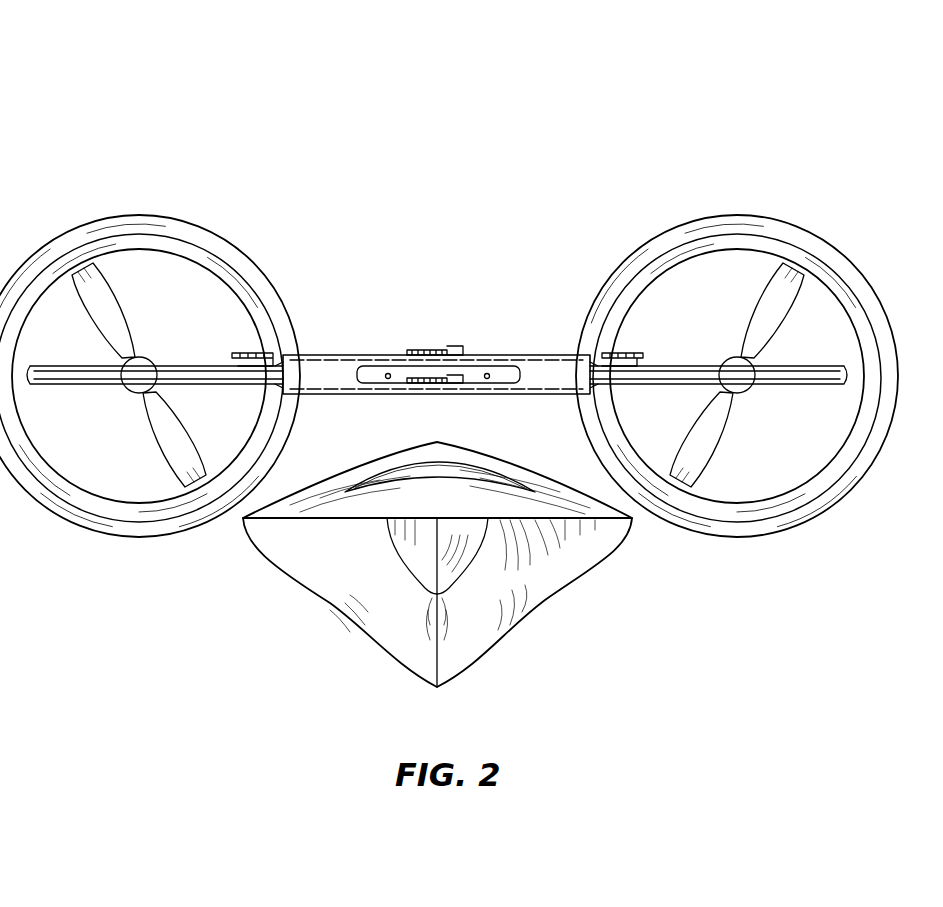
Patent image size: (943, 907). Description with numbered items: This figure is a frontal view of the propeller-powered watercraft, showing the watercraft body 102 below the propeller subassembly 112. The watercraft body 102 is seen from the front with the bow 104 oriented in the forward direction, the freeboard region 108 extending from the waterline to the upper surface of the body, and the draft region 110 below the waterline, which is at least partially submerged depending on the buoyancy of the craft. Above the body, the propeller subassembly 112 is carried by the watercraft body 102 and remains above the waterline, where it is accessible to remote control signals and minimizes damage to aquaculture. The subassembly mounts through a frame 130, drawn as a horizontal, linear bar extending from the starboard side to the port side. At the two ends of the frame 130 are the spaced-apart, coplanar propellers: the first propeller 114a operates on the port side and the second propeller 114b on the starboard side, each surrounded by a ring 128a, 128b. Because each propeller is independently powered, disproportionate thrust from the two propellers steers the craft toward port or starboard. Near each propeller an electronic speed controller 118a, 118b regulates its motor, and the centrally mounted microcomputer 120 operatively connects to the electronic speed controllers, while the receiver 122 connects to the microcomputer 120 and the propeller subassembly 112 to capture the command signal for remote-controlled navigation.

The propeller subassembly 112 is at (133, 63).
The first rotor guard ring 128a is at (140, 215).
The second rotor guard ring 128b is at (740, 215).
The frame 130 is at (823, 385).
The first propeller 114a is at (165, 433).
The second propeller 114b is at (770, 300).
The electronic speed controller 118a is at (252, 353).
The electronic speed controller 118b is at (620, 353).
The microcomputer 120 is at (432, 346).
The receiver 122 is at (432, 384).
The watercraft body 102 is at (300, 648).
The bow 104 is at (417, 545).
The freeboard region 108 is at (440, 440).
The draft region 110 is at (463, 687).